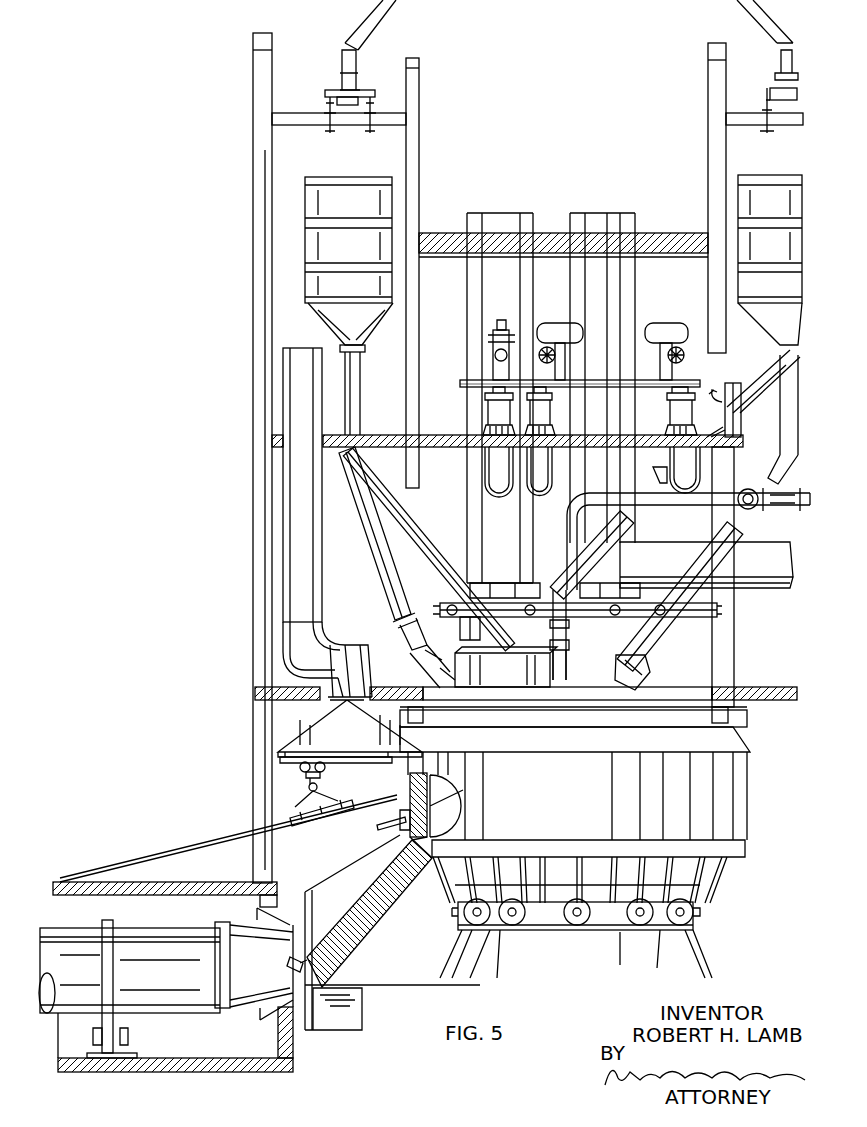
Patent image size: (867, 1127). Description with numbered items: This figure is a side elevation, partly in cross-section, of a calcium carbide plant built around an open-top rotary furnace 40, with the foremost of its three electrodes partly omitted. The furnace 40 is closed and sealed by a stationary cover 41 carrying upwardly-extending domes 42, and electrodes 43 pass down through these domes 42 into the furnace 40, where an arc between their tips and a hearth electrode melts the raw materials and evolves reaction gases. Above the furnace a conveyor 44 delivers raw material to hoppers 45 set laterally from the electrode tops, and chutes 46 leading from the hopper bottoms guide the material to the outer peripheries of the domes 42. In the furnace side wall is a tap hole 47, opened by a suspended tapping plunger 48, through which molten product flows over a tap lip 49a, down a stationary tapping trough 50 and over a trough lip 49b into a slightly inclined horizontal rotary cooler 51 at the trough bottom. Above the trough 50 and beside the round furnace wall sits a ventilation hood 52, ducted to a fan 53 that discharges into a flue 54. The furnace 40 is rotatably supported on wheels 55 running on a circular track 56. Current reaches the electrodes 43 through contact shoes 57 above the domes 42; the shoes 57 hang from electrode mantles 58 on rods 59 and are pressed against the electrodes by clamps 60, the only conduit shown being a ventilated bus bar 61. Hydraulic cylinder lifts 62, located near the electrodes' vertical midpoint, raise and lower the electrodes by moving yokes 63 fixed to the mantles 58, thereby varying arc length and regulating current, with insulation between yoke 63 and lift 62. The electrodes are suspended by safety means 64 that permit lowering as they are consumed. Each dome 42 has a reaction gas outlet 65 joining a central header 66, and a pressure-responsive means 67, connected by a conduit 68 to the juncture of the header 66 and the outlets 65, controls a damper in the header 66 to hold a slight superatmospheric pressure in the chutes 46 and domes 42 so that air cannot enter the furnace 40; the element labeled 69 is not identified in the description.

The rotary furnace 40 is at (575, 815).
The stationary cover 41 is at (684, 684).
The domes 42 is at (506, 667).
The electrodes 43 is at (648, 656).
The conveyor 44 is at (330, 92).
The hoppers 45 is at (553, 305).
The chutes 46 is at (778, 368).
The tap hole 47 is at (447, 805).
The tapping plunger 48 is at (306, 828).
The tap lip 49a is at (380, 826).
The trough lip 49b is at (277, 962).
The stationary tapping trough 50 is at (392, 932).
The rotary cooler 51 is at (138, 928).
The ventilation hood 52 is at (350, 728).
The fan 53 is at (283, 640).
The flue 54 is at (322, 550).
The wheels 55 is at (705, 917).
The circular track 56 is at (695, 930).
The contact shoes 57 is at (458, 633).
The electrode mantles 58 is at (478, 520).
The rods 59 is at (553, 585).
The clamps 60 is at (450, 602).
The ventilated bus bar 61 is at (770, 590).
The hydraulic cylinder lifts 62 is at (530, 413).
The yokes 63 is at (460, 383).
The safety means 64 is at (482, 339).
The reaction gas outlet 65 is at (570, 655).
The central header 66 is at (567, 528).
The pressure-responsive means 67 is at (747, 414).
The connecting conduit 68 is at (711, 413).
The valve 69 is at (770, 505).